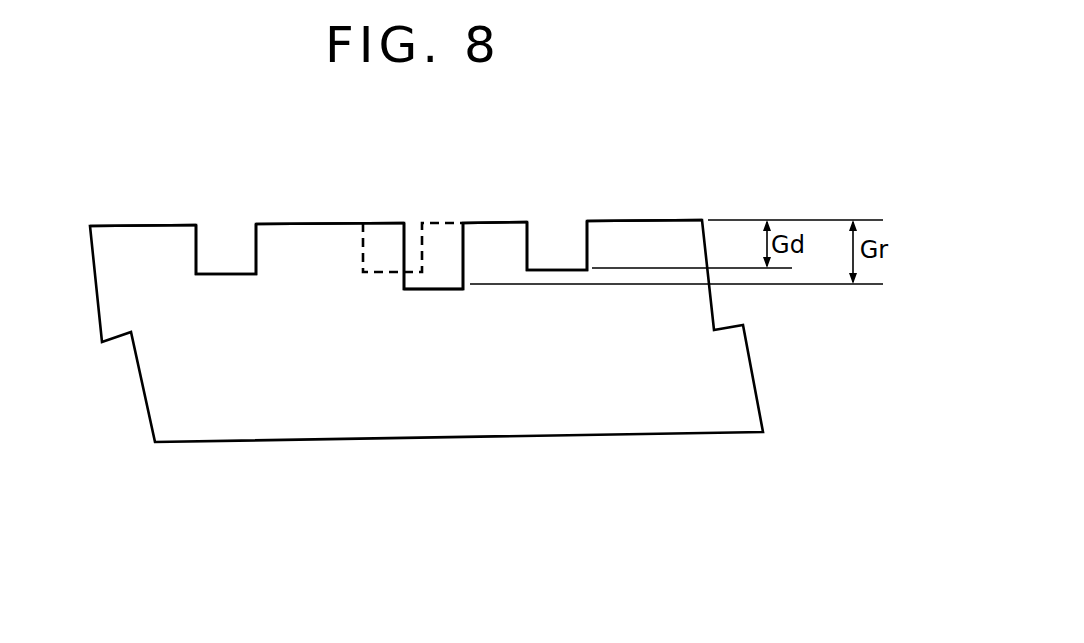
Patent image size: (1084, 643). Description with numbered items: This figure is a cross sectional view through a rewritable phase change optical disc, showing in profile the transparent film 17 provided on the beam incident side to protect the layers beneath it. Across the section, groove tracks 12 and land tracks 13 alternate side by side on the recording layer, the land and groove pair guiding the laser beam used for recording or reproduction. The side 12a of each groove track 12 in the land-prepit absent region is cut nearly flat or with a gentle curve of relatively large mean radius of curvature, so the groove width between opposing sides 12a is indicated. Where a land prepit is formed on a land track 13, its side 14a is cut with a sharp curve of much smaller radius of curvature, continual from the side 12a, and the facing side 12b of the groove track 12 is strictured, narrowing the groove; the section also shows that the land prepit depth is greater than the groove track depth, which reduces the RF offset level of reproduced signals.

The transparent film 17 is at (157, 375).
The groove track 12 is at (214, 274).
The land track 13 is at (148, 226).
The side of groove track 12a is at (197, 242).
The side of groove track facing land prepit 12b is at (463, 251).
The side of land prepit 14a is at (406, 280).